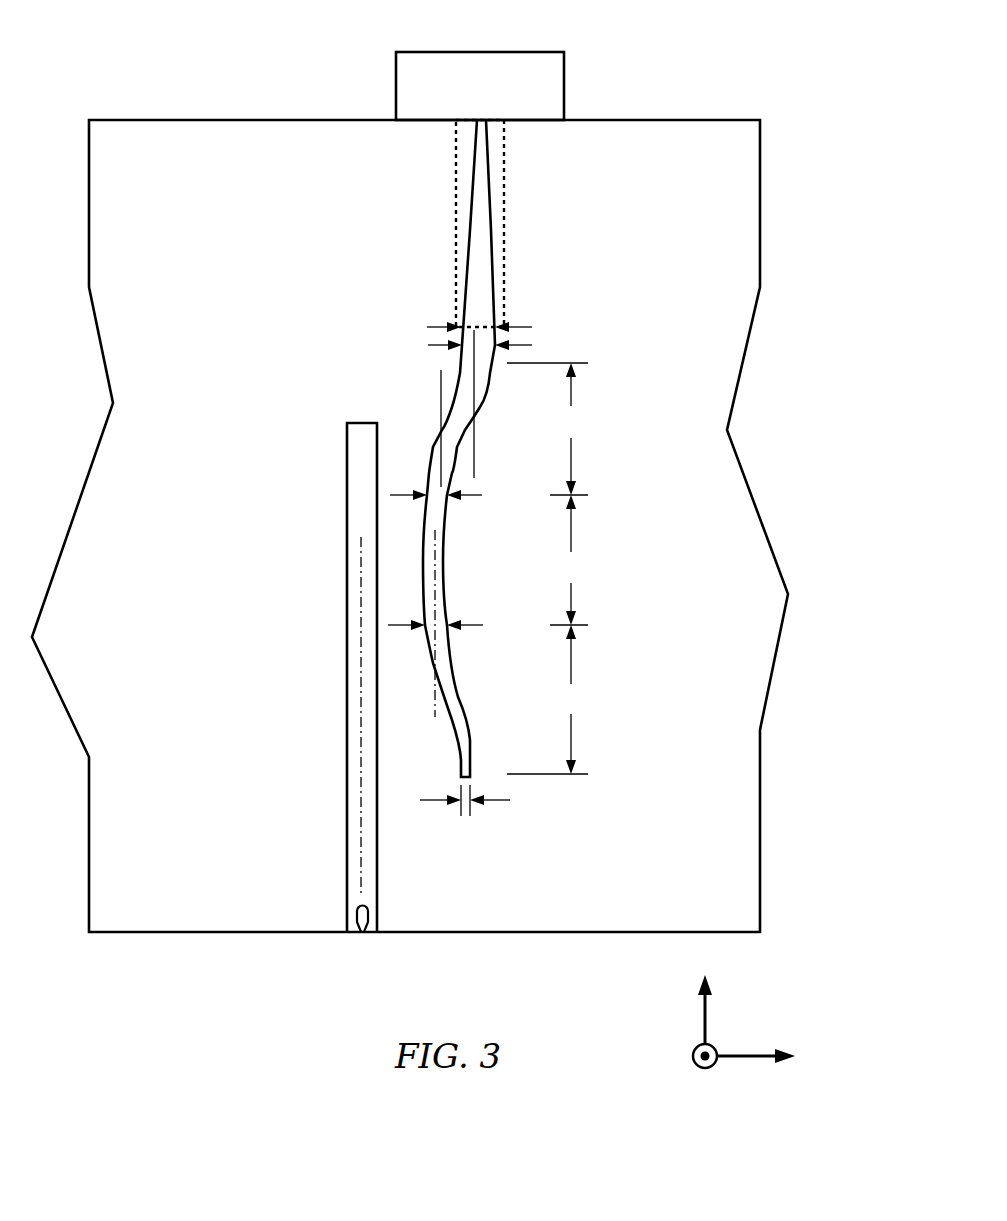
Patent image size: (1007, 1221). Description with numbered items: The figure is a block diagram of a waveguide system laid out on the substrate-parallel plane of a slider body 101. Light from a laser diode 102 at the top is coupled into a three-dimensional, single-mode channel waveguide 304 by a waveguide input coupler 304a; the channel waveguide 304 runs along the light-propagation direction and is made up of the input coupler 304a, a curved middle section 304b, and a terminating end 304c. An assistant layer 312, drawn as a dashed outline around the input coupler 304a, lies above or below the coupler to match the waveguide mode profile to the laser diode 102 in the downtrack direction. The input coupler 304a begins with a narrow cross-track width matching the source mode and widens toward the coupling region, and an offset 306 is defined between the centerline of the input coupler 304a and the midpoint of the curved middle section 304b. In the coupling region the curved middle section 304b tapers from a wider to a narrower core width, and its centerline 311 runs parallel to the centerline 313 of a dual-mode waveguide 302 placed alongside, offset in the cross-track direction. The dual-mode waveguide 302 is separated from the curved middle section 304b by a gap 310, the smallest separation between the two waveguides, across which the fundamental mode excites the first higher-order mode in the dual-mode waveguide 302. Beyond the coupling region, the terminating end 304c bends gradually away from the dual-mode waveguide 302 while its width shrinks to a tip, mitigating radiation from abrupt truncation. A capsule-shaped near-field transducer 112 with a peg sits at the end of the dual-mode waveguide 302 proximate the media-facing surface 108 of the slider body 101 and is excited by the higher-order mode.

The slider body 101 is at (205, 72).
The laser diode 102 is at (396, 52).
The media-facing surface 108 is at (717, 935).
The near-field transducer 112 is at (358, 908).
The dual-mode waveguide 302 is at (347, 570).
The channel waveguide 304 is at (516, 448).
The waveguide input coupler 304a is at (475, 237).
The curved middle section 304b is at (445, 559).
The terminating end 304c is at (462, 755).
The offset 306 is at (393, 447).
The gap 310 is at (413, 578).
The centerline of the curved middle section 311 is at (434, 702).
The assistant layer 312 is at (504, 165).
The centerline of the output waveguide 313 is at (361, 646).